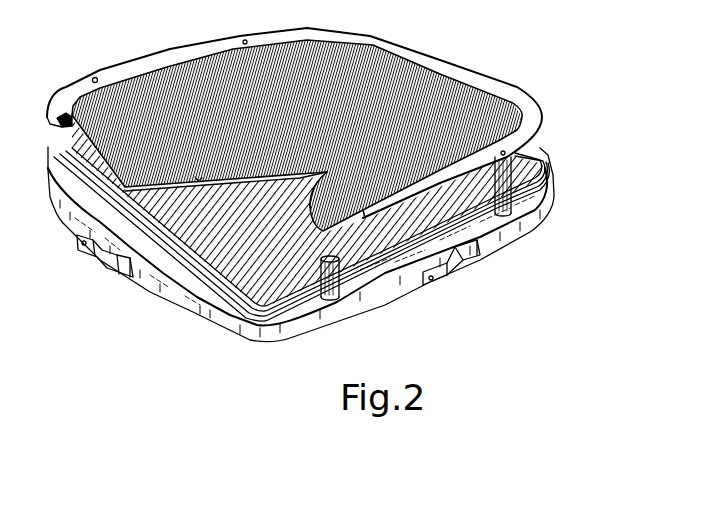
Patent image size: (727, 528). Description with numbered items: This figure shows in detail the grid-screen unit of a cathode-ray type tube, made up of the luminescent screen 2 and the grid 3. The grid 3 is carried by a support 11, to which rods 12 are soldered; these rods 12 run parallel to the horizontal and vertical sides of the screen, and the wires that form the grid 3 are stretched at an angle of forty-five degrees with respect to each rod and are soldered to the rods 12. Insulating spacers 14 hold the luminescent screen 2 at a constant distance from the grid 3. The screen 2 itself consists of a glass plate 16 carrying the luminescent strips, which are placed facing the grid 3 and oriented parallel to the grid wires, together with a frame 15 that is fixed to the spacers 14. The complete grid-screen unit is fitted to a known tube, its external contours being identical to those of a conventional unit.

The luminescent screen 2 is at (190, 68).
The grid 3 is at (268, 325).
The support of grid 11 is at (63, 200).
The rods 12 is at (198, 272).
The insulating spacers 14 is at (510, 205).
The frame 15 is at (77, 88).
The glass plate 16 is at (362, 214).